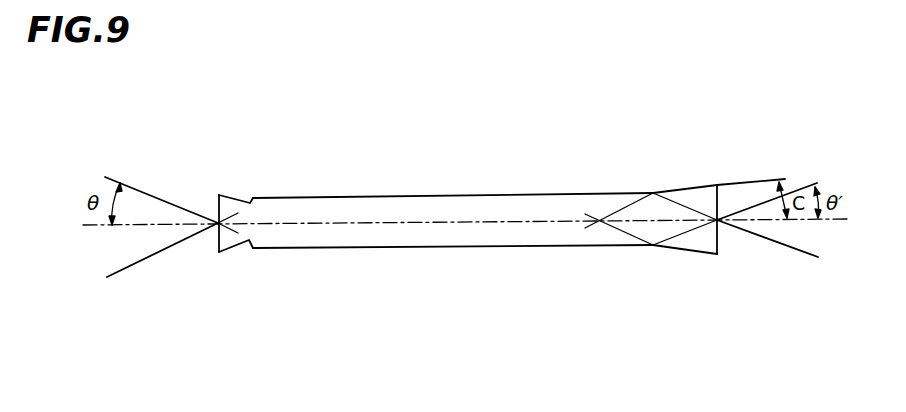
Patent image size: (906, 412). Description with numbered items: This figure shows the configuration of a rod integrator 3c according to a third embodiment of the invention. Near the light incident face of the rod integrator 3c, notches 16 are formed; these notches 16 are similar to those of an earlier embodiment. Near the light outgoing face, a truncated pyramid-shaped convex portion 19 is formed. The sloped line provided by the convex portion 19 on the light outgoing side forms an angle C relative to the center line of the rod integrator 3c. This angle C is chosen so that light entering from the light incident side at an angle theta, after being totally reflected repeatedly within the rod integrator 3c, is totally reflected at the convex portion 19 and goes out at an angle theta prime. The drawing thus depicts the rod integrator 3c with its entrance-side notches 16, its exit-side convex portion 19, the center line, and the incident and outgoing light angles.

The notches 16 is at (246, 203).
The rod integrator 3c is at (497, 197).
The truncated pyramid-shaped convex portion 19 is at (692, 187).